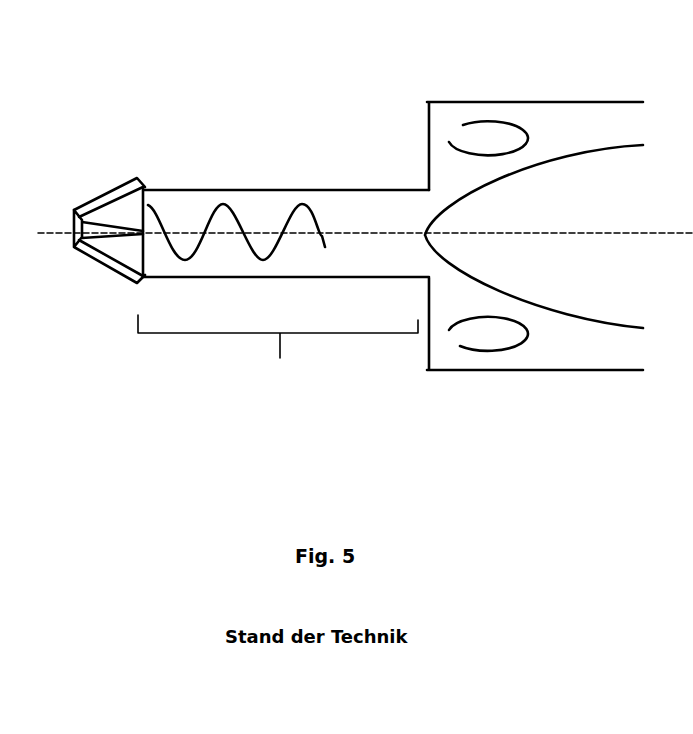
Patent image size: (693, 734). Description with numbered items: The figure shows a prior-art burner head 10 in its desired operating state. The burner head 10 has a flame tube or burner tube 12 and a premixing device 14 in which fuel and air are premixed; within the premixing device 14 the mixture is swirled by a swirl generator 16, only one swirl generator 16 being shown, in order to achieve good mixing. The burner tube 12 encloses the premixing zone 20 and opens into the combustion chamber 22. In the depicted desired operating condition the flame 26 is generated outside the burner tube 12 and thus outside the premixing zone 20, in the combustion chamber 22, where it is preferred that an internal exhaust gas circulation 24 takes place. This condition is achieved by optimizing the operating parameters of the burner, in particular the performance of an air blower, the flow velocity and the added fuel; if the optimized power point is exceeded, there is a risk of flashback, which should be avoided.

The burner head 10 is at (365, 258).
The burner tube 12 is at (308, 278).
The premixing device 14 is at (99, 156).
The swirl generator 16 is at (120, 183).
The premixing zone 20 is at (278, 356).
The combustion chamber 22 is at (587, 123).
The internal exhaust gas circulation 24 is at (478, 110).
The flame 26 is at (534, 236).